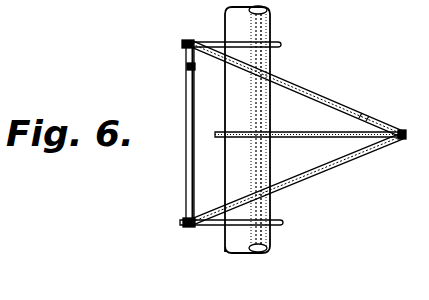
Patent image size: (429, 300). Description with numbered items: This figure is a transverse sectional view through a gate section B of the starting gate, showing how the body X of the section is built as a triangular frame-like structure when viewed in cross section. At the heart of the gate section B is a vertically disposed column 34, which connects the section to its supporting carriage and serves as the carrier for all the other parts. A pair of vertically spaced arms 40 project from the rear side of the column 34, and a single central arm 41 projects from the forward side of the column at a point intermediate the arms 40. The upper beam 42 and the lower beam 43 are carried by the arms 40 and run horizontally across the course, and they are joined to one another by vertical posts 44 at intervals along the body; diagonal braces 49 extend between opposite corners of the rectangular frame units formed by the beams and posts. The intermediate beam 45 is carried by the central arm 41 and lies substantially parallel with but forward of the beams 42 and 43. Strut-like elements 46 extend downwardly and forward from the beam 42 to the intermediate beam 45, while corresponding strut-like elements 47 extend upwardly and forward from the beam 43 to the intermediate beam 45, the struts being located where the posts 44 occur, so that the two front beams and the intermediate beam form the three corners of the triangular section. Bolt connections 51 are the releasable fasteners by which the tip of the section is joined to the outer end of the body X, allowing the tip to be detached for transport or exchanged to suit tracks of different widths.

The column 34 is at (262, 22).
The arms 40 is at (212, 42).
The central arm 41 is at (355, 137).
The beam 42 is at (183, 45).
The beam 43 is at (184, 221).
The vertical posts 44 is at (186, 154).
The intermediate beam 45 is at (402, 130).
The strut-like elements 46 is at (323, 101).
The strut-like elements 47 is at (327, 167).
The diagonal braces 49 is at (186, 67).
The bolt connections 51 is at (390, 0).
The gate section B is at (186, 176).
The body X is at (186, 110).